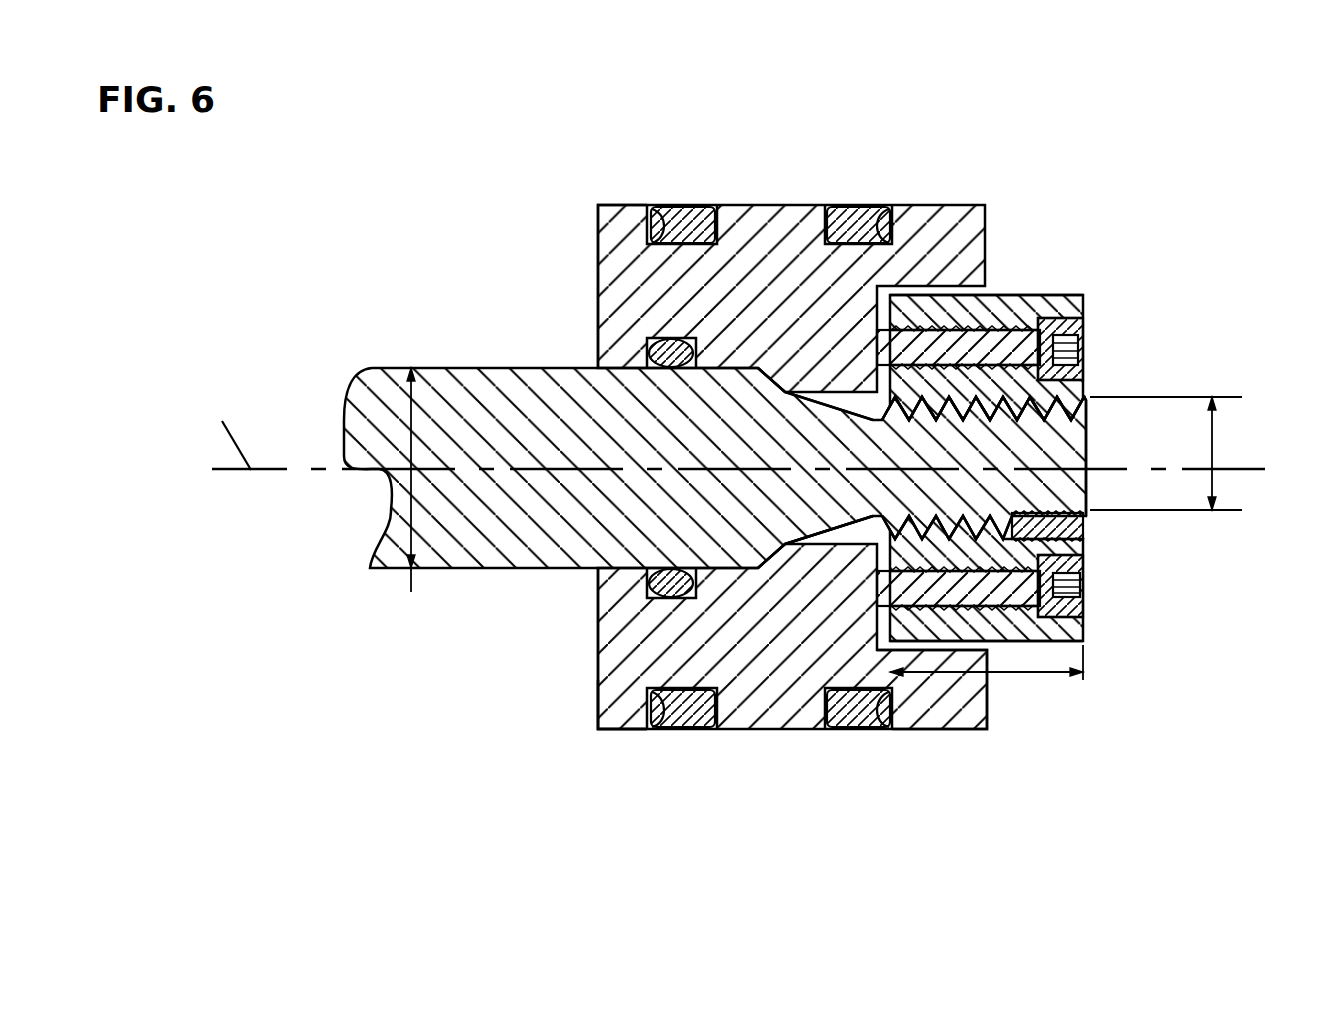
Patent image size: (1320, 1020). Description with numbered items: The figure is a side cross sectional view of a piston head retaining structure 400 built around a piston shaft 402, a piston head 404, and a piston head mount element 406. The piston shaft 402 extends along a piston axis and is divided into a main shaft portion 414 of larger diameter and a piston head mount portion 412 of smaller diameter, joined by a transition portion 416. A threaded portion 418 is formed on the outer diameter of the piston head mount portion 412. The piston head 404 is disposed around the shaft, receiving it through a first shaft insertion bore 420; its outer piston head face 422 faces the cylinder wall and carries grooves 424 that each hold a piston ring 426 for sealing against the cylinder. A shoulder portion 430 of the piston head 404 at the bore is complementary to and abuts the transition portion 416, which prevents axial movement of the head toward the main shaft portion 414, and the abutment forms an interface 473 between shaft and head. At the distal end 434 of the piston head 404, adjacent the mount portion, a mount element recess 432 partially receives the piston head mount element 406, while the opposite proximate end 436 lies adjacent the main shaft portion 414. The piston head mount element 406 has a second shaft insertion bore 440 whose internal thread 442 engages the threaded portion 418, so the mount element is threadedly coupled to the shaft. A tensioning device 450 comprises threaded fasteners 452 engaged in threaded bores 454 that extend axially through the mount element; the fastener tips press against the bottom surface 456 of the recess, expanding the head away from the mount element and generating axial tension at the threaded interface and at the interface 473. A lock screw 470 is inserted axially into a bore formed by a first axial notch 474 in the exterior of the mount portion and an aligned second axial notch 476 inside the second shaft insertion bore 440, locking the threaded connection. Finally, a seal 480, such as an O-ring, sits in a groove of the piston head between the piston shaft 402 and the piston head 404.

The piston head retaining structure 400 is at (293, 207).
The piston shaft 402 is at (375, 390).
The piston head 404 is at (915, 228).
The piston head mount element 406 is at (1030, 303).
The piston head mount portion 412 is at (1072, 498).
The main shaft portion 414 is at (545, 545).
The transition portion 416 is at (770, 560).
The threaded portion 418 is at (1058, 380).
The first shaft insertion bore 420 is at (860, 400).
The piston head face 422 is at (613, 207).
The grooves 424 is at (665, 212).
The piston ring 426 is at (680, 208).
The shoulder portion 430 is at (783, 523).
The mount element recess 432 is at (985, 310).
The distal end 434 is at (988, 712).
The proximate end 436 is at (600, 707).
The second shaft insertion bore 440 is at (1175, 397).
The thread 442 is at (990, 403).
The tensioning device 450 is at (1175, 313).
The threaded fasteners 452 is at (1075, 352).
The threaded bores 454 is at (1065, 340).
The bottom surface 456 is at (882, 315).
The lock screw 470 is at (1090, 520).
The interface 473 is at (762, 393).
The first axial notch 474 is at (1047, 535).
The second axial notch 476 is at (1045, 537).
The seal 480 is at (667, 337).